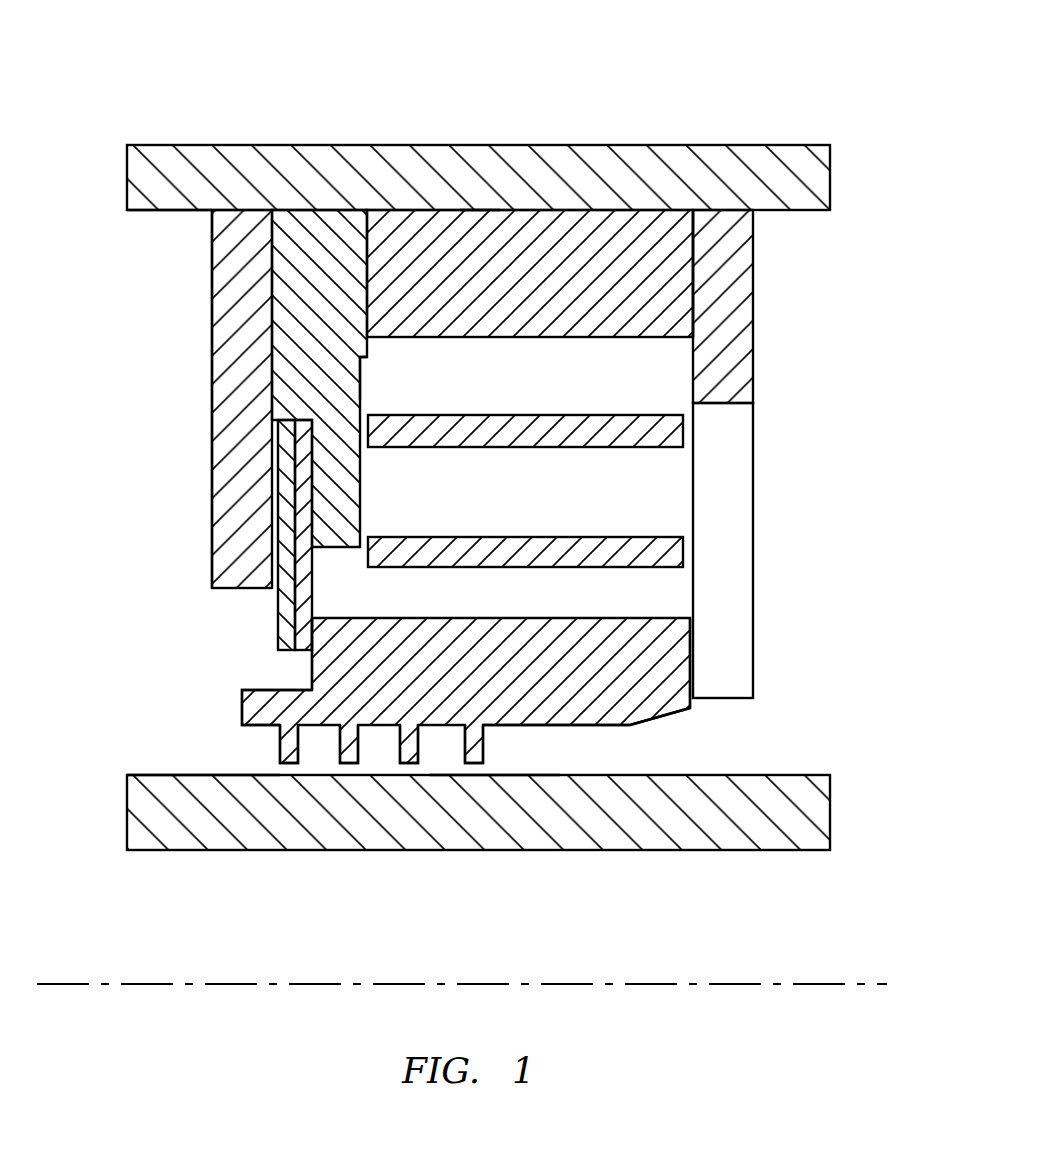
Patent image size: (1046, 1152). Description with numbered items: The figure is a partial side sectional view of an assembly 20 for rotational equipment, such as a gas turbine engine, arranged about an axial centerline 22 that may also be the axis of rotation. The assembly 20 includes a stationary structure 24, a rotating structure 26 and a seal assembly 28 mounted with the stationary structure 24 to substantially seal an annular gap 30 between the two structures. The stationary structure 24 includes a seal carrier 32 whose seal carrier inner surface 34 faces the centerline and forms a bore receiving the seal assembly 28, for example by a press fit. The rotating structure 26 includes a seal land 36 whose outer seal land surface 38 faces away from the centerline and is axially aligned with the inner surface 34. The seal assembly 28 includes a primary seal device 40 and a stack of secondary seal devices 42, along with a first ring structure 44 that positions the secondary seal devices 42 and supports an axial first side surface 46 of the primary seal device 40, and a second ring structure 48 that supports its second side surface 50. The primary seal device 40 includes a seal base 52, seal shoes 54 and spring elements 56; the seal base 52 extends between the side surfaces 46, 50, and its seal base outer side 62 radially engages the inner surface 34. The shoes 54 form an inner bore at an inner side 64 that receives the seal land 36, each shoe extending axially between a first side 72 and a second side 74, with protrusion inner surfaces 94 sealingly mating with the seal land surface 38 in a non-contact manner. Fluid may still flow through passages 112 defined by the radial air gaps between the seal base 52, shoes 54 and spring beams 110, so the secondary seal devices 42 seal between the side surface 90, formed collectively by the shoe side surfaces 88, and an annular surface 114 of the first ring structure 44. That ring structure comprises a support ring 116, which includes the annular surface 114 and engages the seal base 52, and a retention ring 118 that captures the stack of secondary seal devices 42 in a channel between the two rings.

The assembly 20 is at (765, 112).
The axial centerline 22 is at (855, 985).
The stationary structure 24 is at (448, 149).
The rotating structure 26 is at (460, 830).
The seal assembly 28 is at (155, 369).
The annular gap 30 is at (143, 637).
The seal carrier 32 is at (165, 143).
The seal carrier inner surface 34 is at (154, 211).
The seal land 36 is at (158, 855).
The seal land surface 38 is at (144, 773).
The primary seal device 40 is at (612, 734).
The secondary seal devices 42 is at (229, 535).
The first ring structure 44 is at (207, 306).
The axial first side surface 46 is at (367, 247).
The second ring structure 48 is at (756, 302).
The second side surface 50 is at (694, 248).
The seal base 52 is at (564, 207).
The seal shoes 54 is at (693, 667).
The spring elements 56 is at (677, 583).
The seal base outer side 62 is at (478, 210).
The inner side 64 is at (495, 752).
The seal shoe first side 72 is at (242, 707).
The seal shoe second side 74 is at (692, 710).
The side surface 88 is at (232, 654).
The side surface 90 is at (310, 665).
The protrusion inner surface 94 is at (462, 764).
The spring beams 110 is at (565, 415).
The passages 112 is at (525, 485).
The annular surface 114 is at (310, 512).
The secondary seal device support ring 116 is at (361, 370).
The retention ring 118 is at (209, 420).